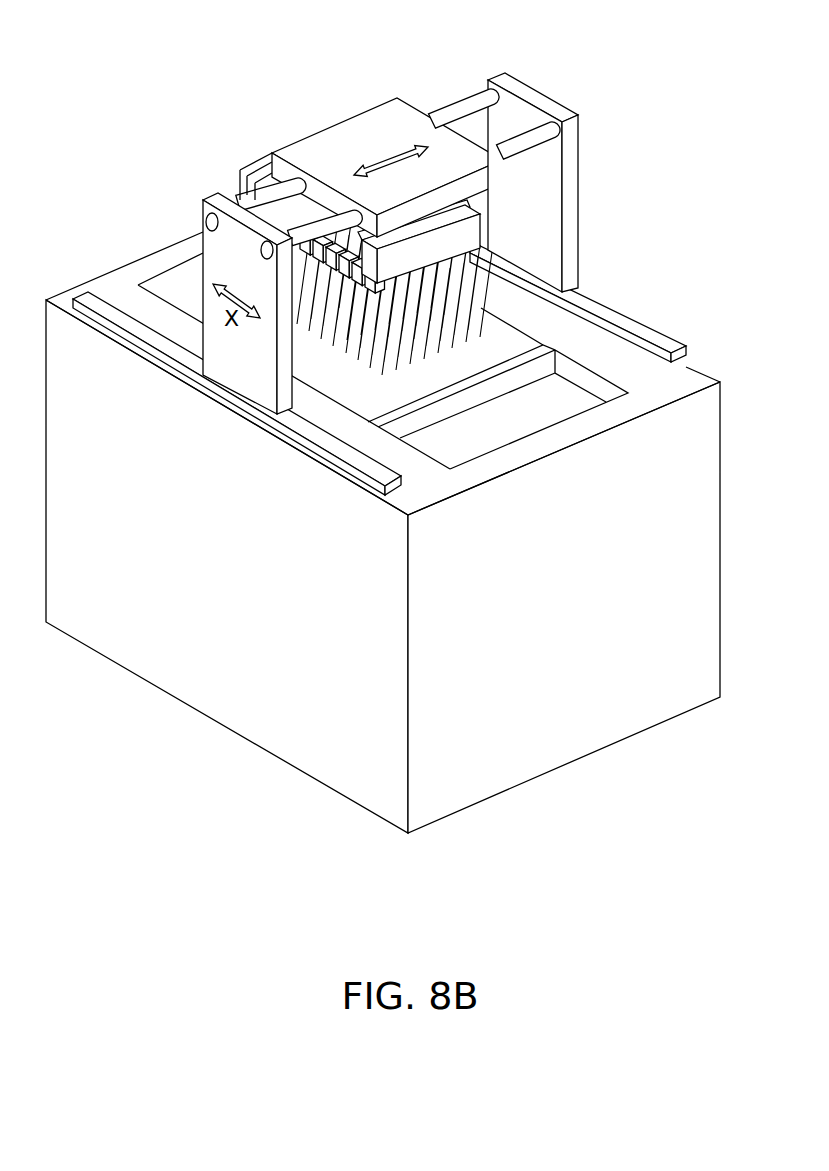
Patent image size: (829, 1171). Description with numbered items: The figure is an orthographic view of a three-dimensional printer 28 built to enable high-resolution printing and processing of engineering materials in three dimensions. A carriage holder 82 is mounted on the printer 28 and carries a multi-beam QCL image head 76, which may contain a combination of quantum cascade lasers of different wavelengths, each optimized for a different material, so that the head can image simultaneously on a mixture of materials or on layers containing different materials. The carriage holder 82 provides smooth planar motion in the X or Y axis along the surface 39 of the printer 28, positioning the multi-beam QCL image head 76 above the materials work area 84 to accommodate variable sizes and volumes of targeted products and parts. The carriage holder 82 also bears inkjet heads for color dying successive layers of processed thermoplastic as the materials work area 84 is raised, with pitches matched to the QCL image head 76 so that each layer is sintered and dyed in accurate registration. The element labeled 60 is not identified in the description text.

The 3D printer 28 is at (714, 348).
The surface 39 is at (615, 352).
The needle holder bar 60 is at (471, 230).
The multi-beam QCL image head 76 is at (337, 122).
The carriage holder 82 is at (539, 98).
The materials work area 84 is at (516, 340).